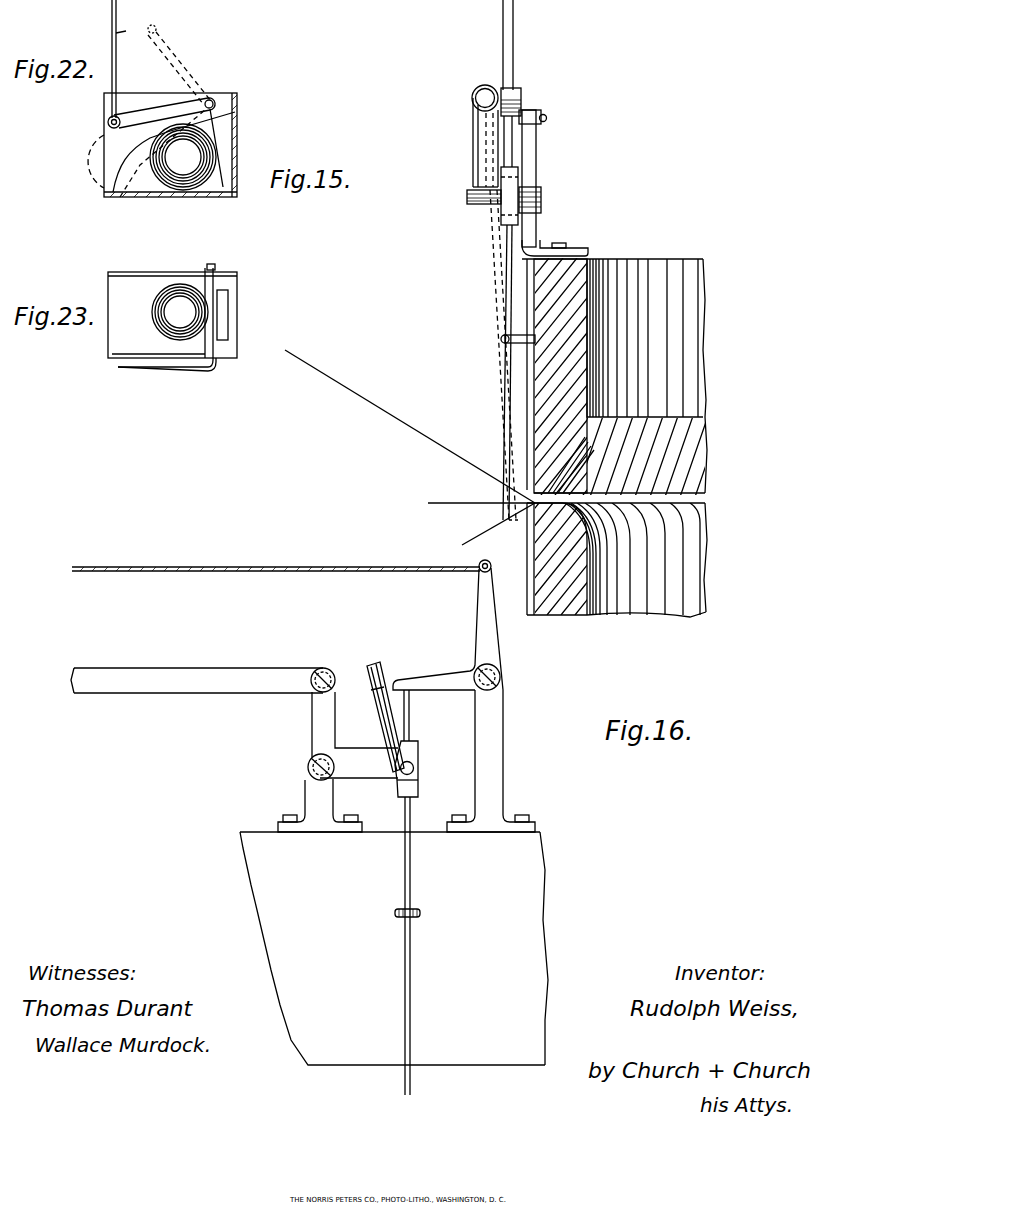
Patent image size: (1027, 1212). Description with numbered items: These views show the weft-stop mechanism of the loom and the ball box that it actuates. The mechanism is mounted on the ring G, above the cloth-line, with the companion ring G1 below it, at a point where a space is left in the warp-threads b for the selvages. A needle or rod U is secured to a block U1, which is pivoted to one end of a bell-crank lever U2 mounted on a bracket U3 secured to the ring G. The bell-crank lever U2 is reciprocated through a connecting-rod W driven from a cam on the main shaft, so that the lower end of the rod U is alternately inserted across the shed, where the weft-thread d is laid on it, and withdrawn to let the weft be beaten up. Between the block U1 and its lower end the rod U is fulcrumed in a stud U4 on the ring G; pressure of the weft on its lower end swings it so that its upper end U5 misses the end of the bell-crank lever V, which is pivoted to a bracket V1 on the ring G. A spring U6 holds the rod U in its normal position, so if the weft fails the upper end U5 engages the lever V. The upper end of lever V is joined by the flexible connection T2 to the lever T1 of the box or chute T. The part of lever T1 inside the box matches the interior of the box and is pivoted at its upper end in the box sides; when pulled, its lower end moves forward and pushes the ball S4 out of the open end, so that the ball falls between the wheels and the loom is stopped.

In FIG. 22, the box or chute T is at (126, 197).
In FIG. 23, the box or chute T is at (172, 303).
In FIG. 22, the lever T1 is at (240, 180).
In FIG. 23, the lever T1 is at (230, 312).
In FIG. 22, the cord, chain, or flexible connection T2 is at (163, 64).
In FIG. 23, the cord, chain, or flexible connection T2 is at (170, 370).
In FIG. 16, the cord, chain, or flexible connection T2 is at (156, 565).
In FIG. 22, the ball S4 is at (183, 157).
In FIG. 23, the ball S4 is at (180, 312).
In FIG. 15, the bell-crank lever V is at (515, 48).
In FIG. 16, the bell-crank lever V is at (476, 640).
In FIG. 15, the bracket V1 is at (521, 100).
In FIG. 16, the bracket V1 is at (491, 761).
In FIG. 15, the needle or rod U is at (503, 381).
In FIG. 16, the needle or rod U is at (411, 880).
In FIG. 15, the block U1 is at (500, 218).
In FIG. 16, the block U1 is at (419, 752).
In FIG. 15, the bell-crank lever U2 is at (536, 148).
In FIG. 16, the bell-crank lever U2 is at (310, 725).
In FIG. 15, the bracket U3 is at (538, 232).
In FIG. 16, the bracket U3 is at (320, 805).
In FIG. 15, the stud U4 is at (502, 339).
In FIG. 16, the stud U4 is at (421, 913).
In FIG. 15, the upper end of rod U5 is at (505, 125).
In FIG. 16, the upper end of rod U5 is at (410, 709).
In FIG. 15, the spring U6 is at (472, 169).
In FIG. 16, the spring U6 is at (383, 676).
In FIG. 15, the ring G is at (566, 377).
In FIG. 16, the ring G is at (394, 948).
In FIG. 15, the ring G1 is at (536, 560).
In FIG. 16, the connecting-rod W is at (197, 682).
In FIG. 15, the warp-threads b is at (410, 447).
In FIG. 15, the weft-thread d is at (481, 492).